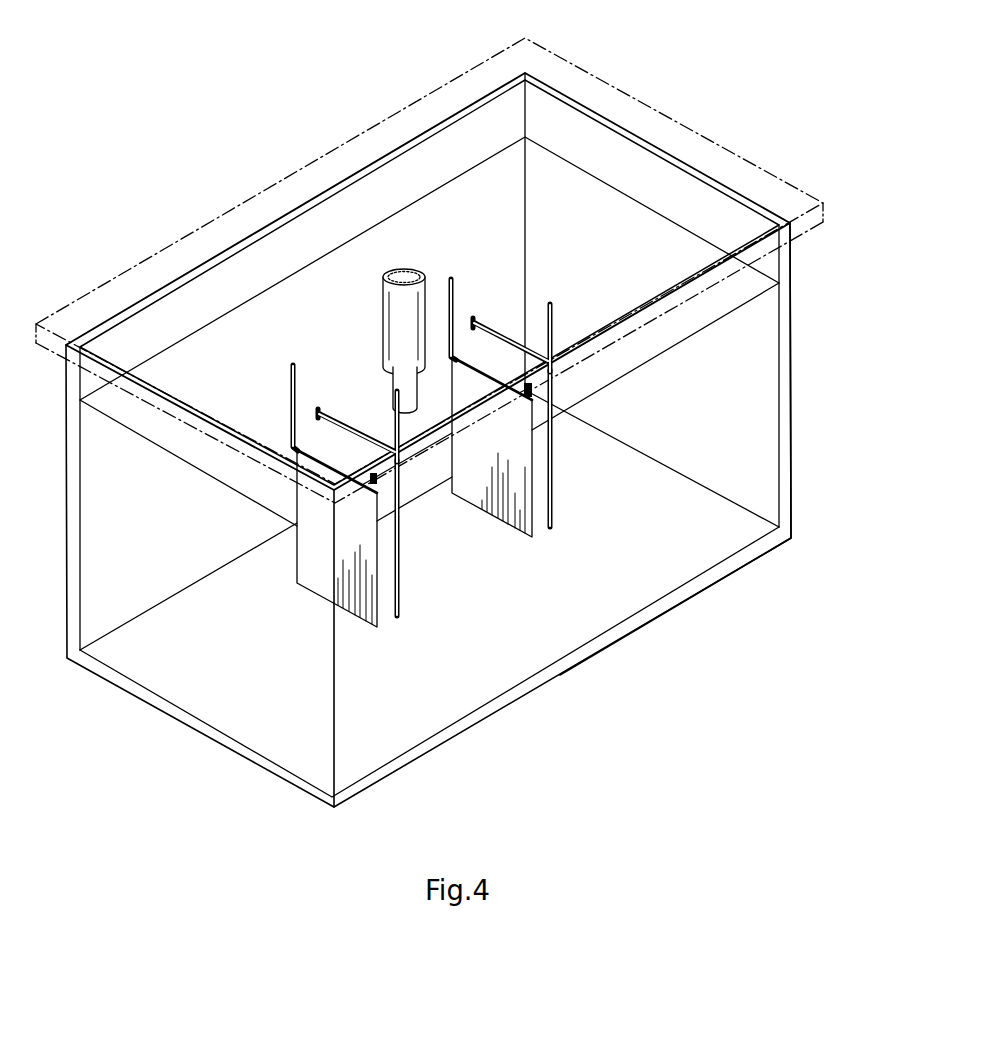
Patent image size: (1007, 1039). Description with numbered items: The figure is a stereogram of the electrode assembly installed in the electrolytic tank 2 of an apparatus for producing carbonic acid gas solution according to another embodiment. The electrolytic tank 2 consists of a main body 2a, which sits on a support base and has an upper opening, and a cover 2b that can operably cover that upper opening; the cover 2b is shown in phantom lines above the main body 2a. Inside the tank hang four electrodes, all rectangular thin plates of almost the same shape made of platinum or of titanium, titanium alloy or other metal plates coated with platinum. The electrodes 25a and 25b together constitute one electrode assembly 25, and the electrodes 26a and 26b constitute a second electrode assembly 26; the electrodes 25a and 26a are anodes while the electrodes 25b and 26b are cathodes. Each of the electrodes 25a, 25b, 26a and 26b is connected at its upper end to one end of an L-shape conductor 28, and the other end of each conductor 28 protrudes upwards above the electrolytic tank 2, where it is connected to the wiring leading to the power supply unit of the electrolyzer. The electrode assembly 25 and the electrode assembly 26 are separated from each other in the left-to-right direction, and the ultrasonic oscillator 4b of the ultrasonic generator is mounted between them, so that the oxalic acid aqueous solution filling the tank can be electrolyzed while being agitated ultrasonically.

The electrolytic tank 2 is at (464, 440).
The main body 2a is at (793, 382).
The cover 2b is at (712, 142).
The ultrasonic oscillator 4b is at (390, 317).
The electrode assembly 25 is at (371, 597).
The electrode 25a is at (392, 614).
The electrode 25b is at (363, 625).
The electrode assembly 26 is at (525, 503).
The electrode 26a is at (520, 538).
The electrode 26b is at (546, 528).
The L-shape conductor 28 is at (289, 394).